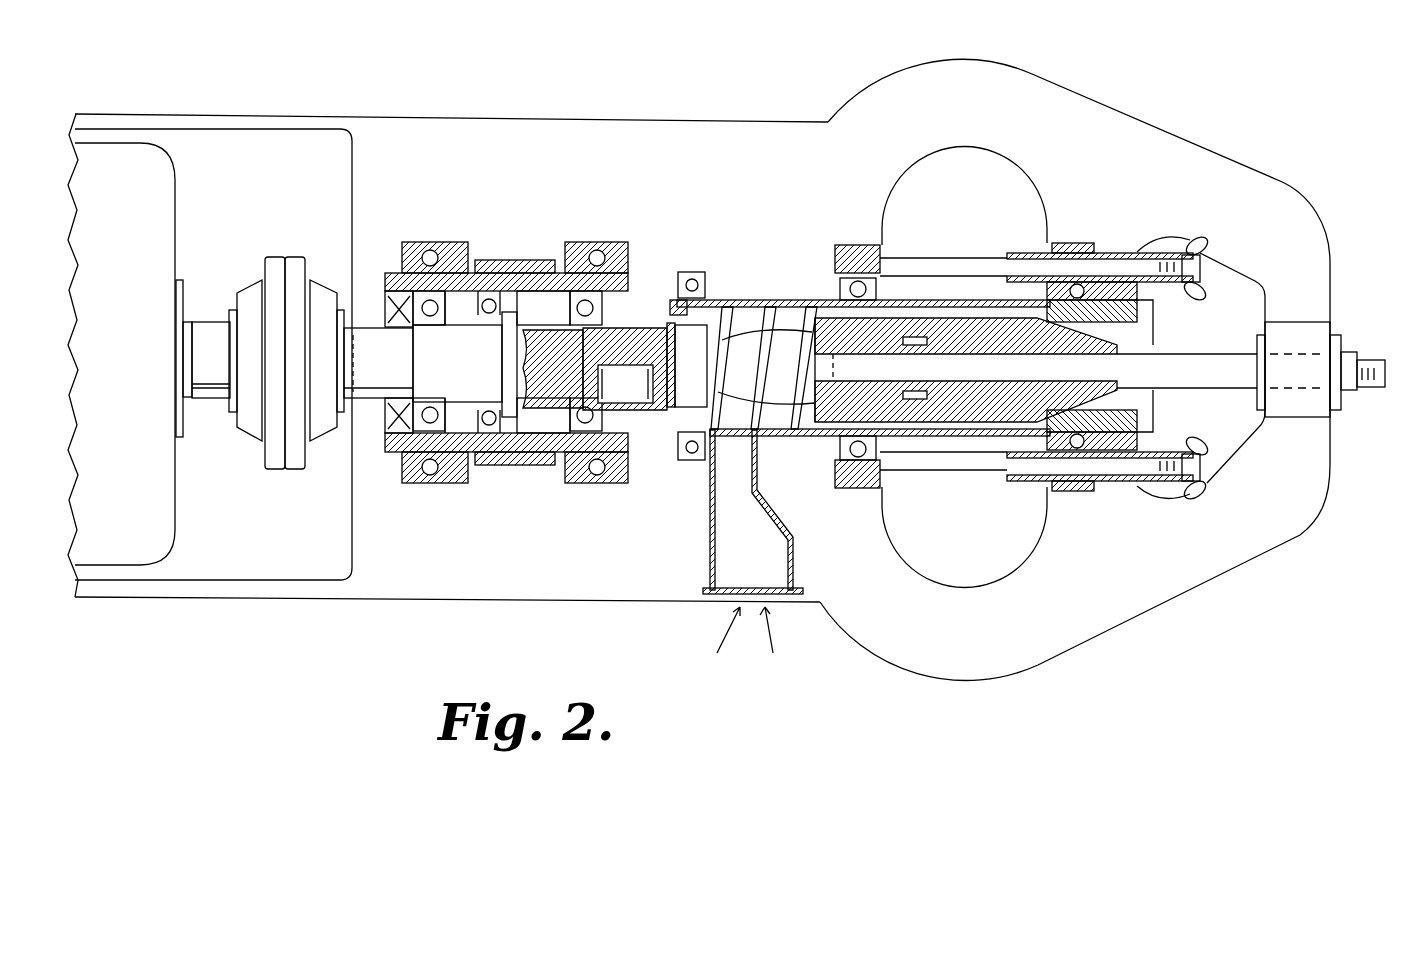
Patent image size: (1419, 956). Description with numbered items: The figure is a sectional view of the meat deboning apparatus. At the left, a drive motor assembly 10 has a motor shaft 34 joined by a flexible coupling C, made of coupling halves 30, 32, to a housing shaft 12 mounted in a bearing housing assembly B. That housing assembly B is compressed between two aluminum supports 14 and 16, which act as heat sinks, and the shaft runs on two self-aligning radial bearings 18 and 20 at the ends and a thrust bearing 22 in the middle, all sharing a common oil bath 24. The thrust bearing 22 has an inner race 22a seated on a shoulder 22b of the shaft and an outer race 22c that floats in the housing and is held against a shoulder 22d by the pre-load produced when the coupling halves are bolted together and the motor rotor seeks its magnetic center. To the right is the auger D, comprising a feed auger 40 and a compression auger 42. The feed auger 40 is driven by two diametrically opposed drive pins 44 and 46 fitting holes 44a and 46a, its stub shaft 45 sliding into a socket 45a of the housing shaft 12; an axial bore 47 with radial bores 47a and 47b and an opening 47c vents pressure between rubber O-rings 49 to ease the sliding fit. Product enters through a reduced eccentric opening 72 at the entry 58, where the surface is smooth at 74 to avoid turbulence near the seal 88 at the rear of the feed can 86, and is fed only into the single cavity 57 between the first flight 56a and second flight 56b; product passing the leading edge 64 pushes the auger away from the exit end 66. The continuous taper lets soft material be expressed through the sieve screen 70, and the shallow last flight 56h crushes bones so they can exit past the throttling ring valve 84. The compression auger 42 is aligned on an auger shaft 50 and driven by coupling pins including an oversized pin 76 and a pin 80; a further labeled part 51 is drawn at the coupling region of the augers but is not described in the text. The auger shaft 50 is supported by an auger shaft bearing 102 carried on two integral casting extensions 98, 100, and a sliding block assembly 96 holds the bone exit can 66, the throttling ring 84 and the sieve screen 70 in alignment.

The drive motor assembly 10 is at (190, 160).
The housing shaft 12 is at (376, 300).
The aluminum support 14 is at (430, 242).
The aluminum support 16 is at (597, 242).
The radial bearing 18 is at (580, 300).
The radial bearing 20 is at (418, 446).
The thrust bearing 22 is at (448, 332).
The inner race 22a is at (548, 290).
The shoulder 22b is at (455, 300).
The outer race 22c is at (493, 298).
The shoulder 22d is at (526, 452).
The oil bath 24 is at (570, 448).
The flexible coupling half 30 is at (300, 474).
The flexible coupling half 32 is at (270, 474).
The motor shaft 34 is at (206, 322).
The feed auger 40 is at (746, 330).
The compression auger 42 is at (950, 300).
The drive pin 44 is at (510, 356).
The drive hole 44a is at (640, 300).
The stub shaft 45 is at (625, 410).
The socket 45a is at (695, 366).
The drive pin 46 is at (530, 384).
The drive hole 46a is at (543, 417).
The axial bore 47 is at (666, 328).
The radial bore 47a is at (650, 410).
The radial bore 47b is at (673, 410).
The opening 47c is at (672, 425).
The O-rings 49 is at (640, 330).
The auger shaft 50 is at (1252, 340).
The hub flange 51 is at (915, 436).
The first flight 56a is at (790, 310).
The second flight 56b is at (810, 440).
The last flight 56h is at (1046, 440).
The cavity 57 is at (776, 335).
The entry 58 is at (720, 600).
The leading edge 64 is at (830, 272).
The exit end 66 is at (1152, 342).
The sieve screen 70 is at (1010, 320).
The reduced eccentric opening 72 is at (766, 472).
The smooth entry end 74 is at (770, 512).
The oversized coupling pin 76 is at (955, 425).
The coupling pin 80 is at (913, 335).
The throttling ring valve 84 is at (1140, 420).
The feed can 86 is at (760, 300).
The seal 88 is at (705, 300).
The sliding block assembly 96 is at (1092, 252).
The integral extension 98 is at (1170, 138).
The integral extension 100 is at (1265, 560).
The auger shaft bearing 102 is at (1332, 330).
The bearing housing assembly B is at (498, 315).
The flexible coupling C is at (272, 300).
The auger D is at (970, 330).